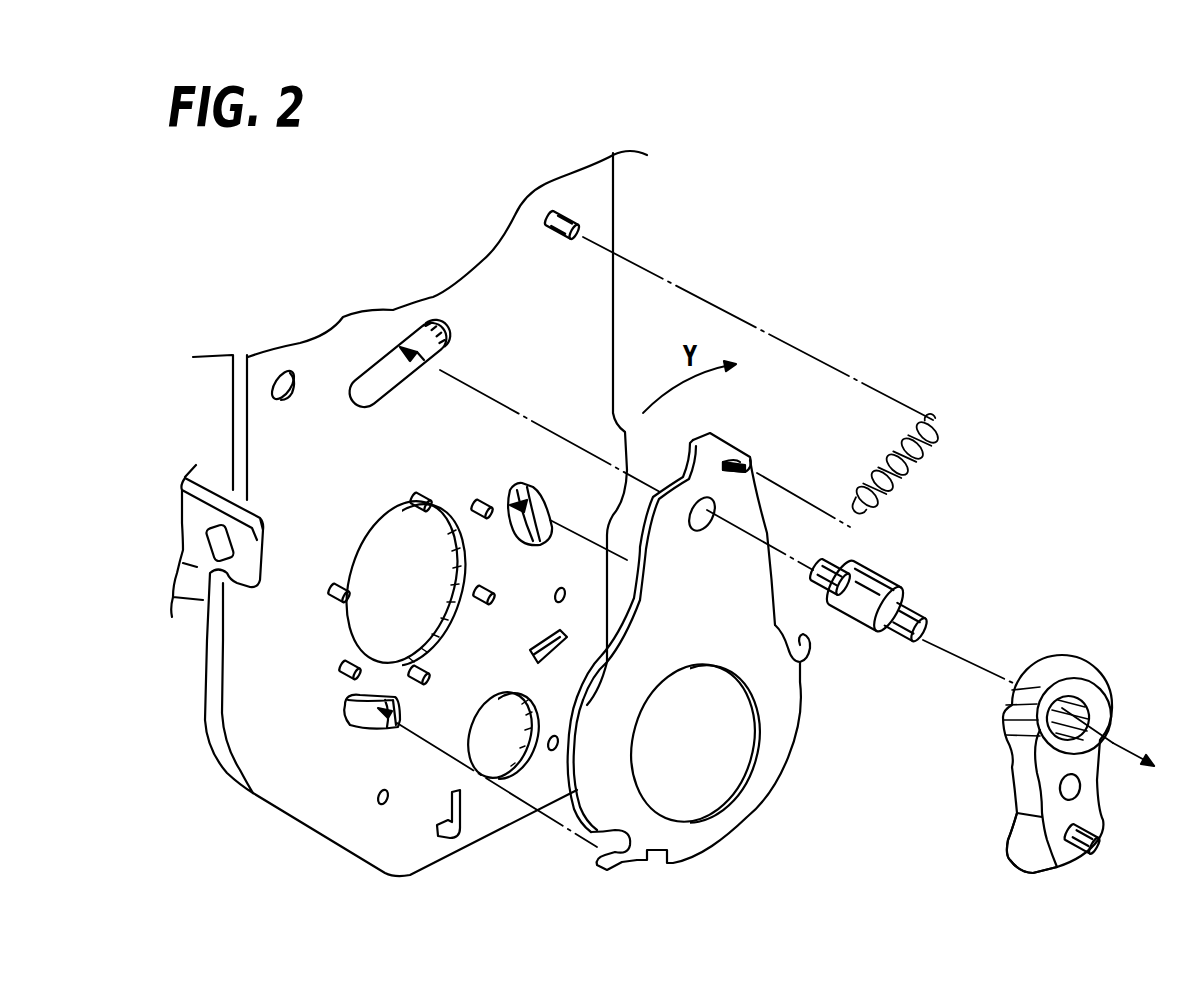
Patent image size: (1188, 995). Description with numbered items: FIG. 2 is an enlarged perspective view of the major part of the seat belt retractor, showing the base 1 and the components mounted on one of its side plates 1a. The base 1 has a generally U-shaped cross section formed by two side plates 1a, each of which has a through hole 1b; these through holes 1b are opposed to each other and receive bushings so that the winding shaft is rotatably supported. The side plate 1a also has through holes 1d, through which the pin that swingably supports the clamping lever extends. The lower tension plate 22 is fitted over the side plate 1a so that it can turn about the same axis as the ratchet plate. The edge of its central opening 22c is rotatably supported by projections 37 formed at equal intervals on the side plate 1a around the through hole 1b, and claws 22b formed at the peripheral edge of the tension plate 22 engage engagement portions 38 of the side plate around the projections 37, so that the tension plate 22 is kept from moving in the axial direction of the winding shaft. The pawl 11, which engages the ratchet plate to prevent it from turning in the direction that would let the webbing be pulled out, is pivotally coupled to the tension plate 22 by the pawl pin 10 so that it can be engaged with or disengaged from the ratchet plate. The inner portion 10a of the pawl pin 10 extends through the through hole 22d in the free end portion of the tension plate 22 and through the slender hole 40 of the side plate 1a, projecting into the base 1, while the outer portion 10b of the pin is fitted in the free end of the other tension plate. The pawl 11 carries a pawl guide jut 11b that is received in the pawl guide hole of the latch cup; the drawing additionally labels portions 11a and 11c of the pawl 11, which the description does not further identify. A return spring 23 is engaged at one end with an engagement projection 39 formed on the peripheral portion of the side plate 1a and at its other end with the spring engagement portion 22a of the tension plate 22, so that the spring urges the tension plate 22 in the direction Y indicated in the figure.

The base 1 is at (620, 193).
The side plate 1a is at (315, 812).
The through hole 1b is at (447, 581).
The through hole 1d is at (294, 395).
The pawl pin 10 is at (898, 586).
The inner portion of pawl pin 10a is at (833, 566).
The outer portion of pawl pin 10b is at (907, 612).
The pawl 11 is at (1066, 755).
The lever arm 11a is at (1017, 862).
The pawl guide jut 11b is at (1103, 853).
The lever bore 11c is at (1100, 753).
The lower tension plate 22 is at (753, 793).
The spring engagement portion 22a is at (740, 457).
The claw 22b is at (617, 860).
The opening 22c is at (663, 697).
The through hole 22d is at (700, 533).
The return spring 23 is at (917, 483).
The projection 37 is at (414, 496).
The engagement portion 38 is at (555, 515).
The engagement projection 39 is at (551, 236).
The slender hole 40 is at (413, 370).